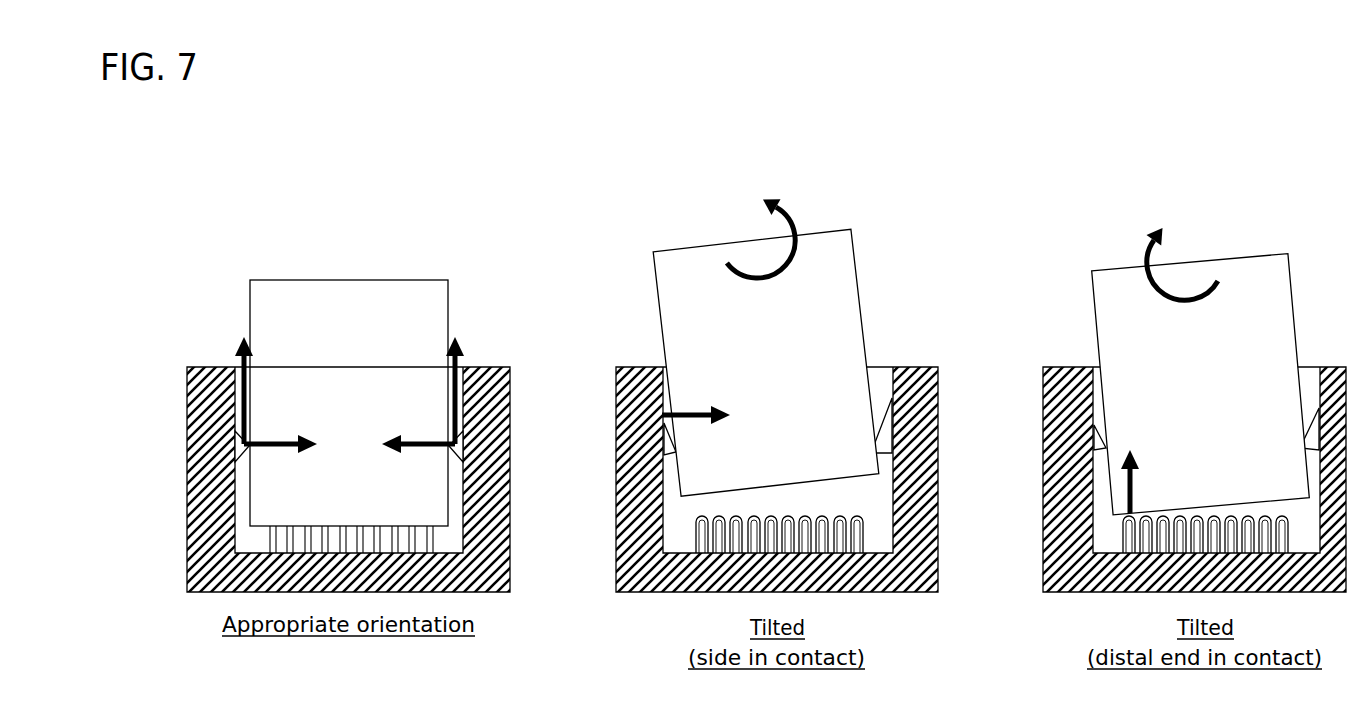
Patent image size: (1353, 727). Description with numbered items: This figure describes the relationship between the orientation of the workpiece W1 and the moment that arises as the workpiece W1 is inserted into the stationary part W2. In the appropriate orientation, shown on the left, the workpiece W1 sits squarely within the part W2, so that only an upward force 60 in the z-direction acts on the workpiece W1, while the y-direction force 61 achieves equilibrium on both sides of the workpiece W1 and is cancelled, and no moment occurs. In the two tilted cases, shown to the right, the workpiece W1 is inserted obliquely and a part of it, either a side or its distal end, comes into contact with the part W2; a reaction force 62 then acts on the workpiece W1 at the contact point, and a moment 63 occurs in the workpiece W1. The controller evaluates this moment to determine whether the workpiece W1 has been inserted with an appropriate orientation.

The workpiece W1 is at (250, 290).
The part W2 is at (200, 492).
The force 60 is at (238, 355).
The y-direction force 61 is at (283, 438).
The reaction force 62 is at (697, 407).
The moment 63 is at (795, 208).